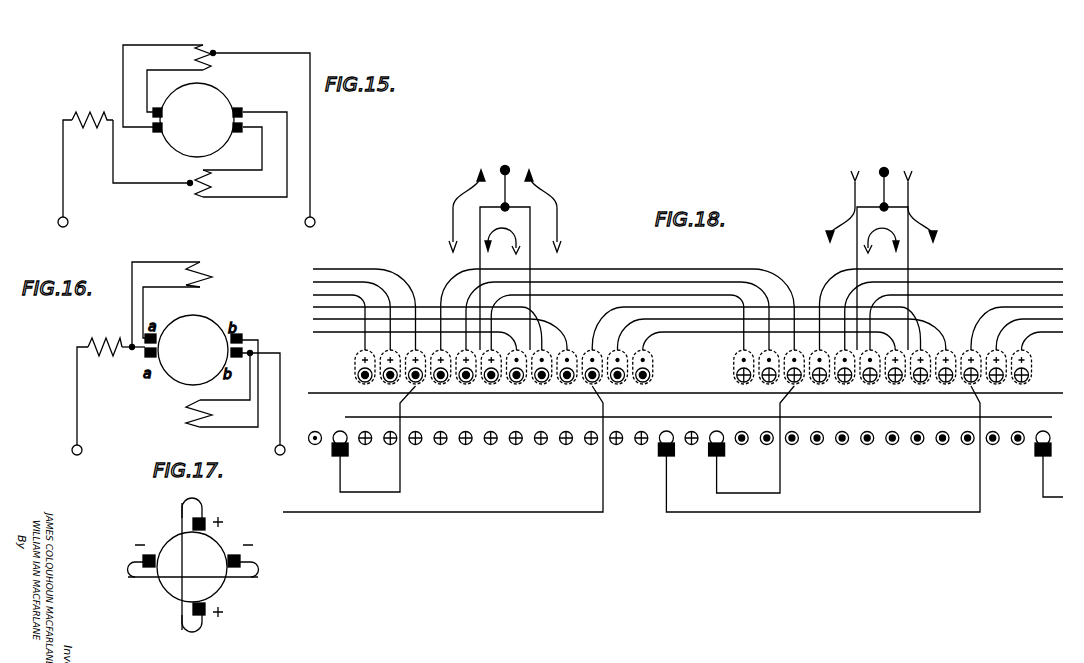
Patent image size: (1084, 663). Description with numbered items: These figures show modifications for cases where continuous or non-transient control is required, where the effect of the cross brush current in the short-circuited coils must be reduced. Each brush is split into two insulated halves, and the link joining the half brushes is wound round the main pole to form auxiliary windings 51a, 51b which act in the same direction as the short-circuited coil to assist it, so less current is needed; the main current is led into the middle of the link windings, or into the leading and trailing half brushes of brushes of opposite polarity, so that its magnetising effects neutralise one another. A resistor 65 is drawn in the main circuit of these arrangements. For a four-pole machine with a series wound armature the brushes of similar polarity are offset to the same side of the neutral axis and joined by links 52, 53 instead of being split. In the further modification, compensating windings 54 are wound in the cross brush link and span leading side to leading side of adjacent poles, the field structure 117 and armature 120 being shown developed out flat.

In FIG. 15, the resistor 65 is at (86, 106).
In FIG. 16, the resistor 65 is at (104, 333).
In FIG. 15, the auxiliary winding 51a is at (200, 47).
In FIG. 16, the auxiliary winding 51a is at (198, 264).
In FIG. 15, the auxiliary winding 51b is at (203, 198).
In FIG. 16, the auxiliary winding 51b is at (195, 426).
In FIG. 15, the armature 120 is at (197, 120).
In FIG. 18, the armature 120 is at (932, 420).
In FIG. 16, the link 53 is at (237, 328).
In FIG. 17, the link 53 is at (228, 578).
In FIG. 17, the link 52 is at (187, 522).
In FIG. 18, the compensating windings 54 is at (591, 268).
In FIG. 18, the field structure 117 is at (893, 395).